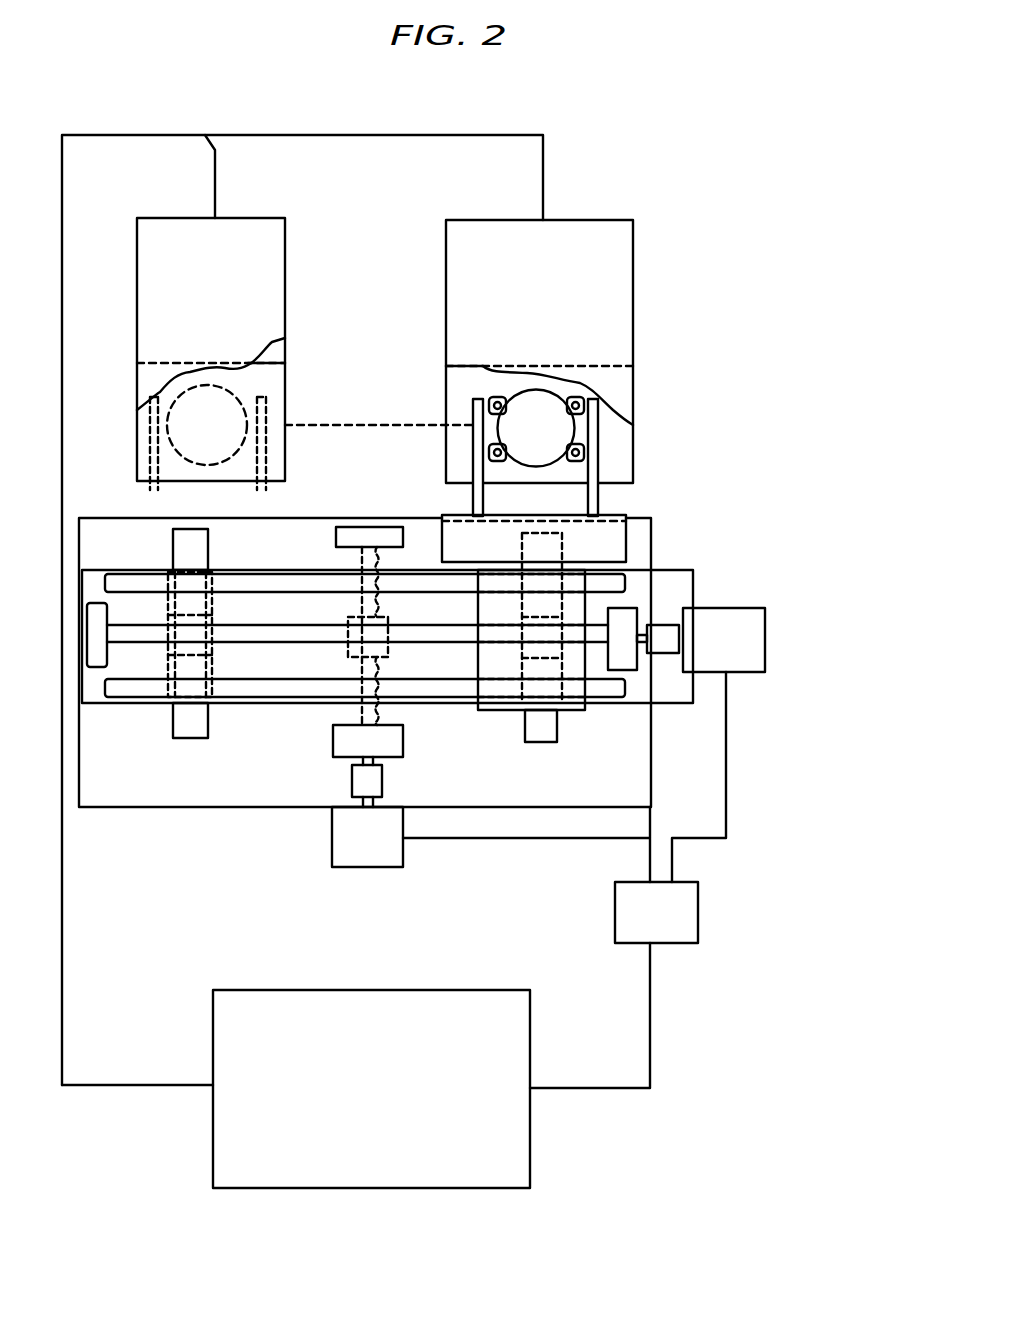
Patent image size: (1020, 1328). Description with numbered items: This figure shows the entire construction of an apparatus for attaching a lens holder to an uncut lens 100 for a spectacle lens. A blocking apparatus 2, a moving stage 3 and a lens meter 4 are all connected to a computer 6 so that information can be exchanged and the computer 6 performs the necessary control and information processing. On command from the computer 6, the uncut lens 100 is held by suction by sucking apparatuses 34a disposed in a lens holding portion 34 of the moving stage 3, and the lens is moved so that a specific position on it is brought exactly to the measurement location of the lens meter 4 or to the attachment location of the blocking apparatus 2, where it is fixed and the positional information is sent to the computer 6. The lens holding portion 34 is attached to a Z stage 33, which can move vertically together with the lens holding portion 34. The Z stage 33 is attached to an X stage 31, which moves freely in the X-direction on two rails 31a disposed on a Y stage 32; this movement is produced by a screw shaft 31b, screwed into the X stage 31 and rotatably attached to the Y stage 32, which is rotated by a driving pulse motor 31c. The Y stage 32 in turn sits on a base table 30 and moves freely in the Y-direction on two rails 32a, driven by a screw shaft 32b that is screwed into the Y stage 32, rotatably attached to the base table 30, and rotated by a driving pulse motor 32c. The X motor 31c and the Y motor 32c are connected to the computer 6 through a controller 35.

The blocking apparatus 2 is at (259, 218).
The moving stage 3 is at (217, 868).
The lens meter 4 is at (617, 220).
The computer 6 is at (466, 1190).
The base table 30 is at (638, 769).
The X stage 31 is at (497, 693).
The rails 31a is at (273, 582).
The screw shaft 31b is at (252, 625).
The driving pulse motor 31c is at (766, 640).
The Y stage 32 is at (694, 583).
The rails 32a is at (192, 540).
The screw shaft 32b is at (353, 718).
The driving pulse motor 32c is at (363, 870).
The Z stage 33 is at (613, 535).
The lens holding portion 34 is at (603, 460).
The sucking apparatuses 34a is at (571, 397).
The controller 35 is at (699, 912).
The uncut lens 100 is at (223, 407).